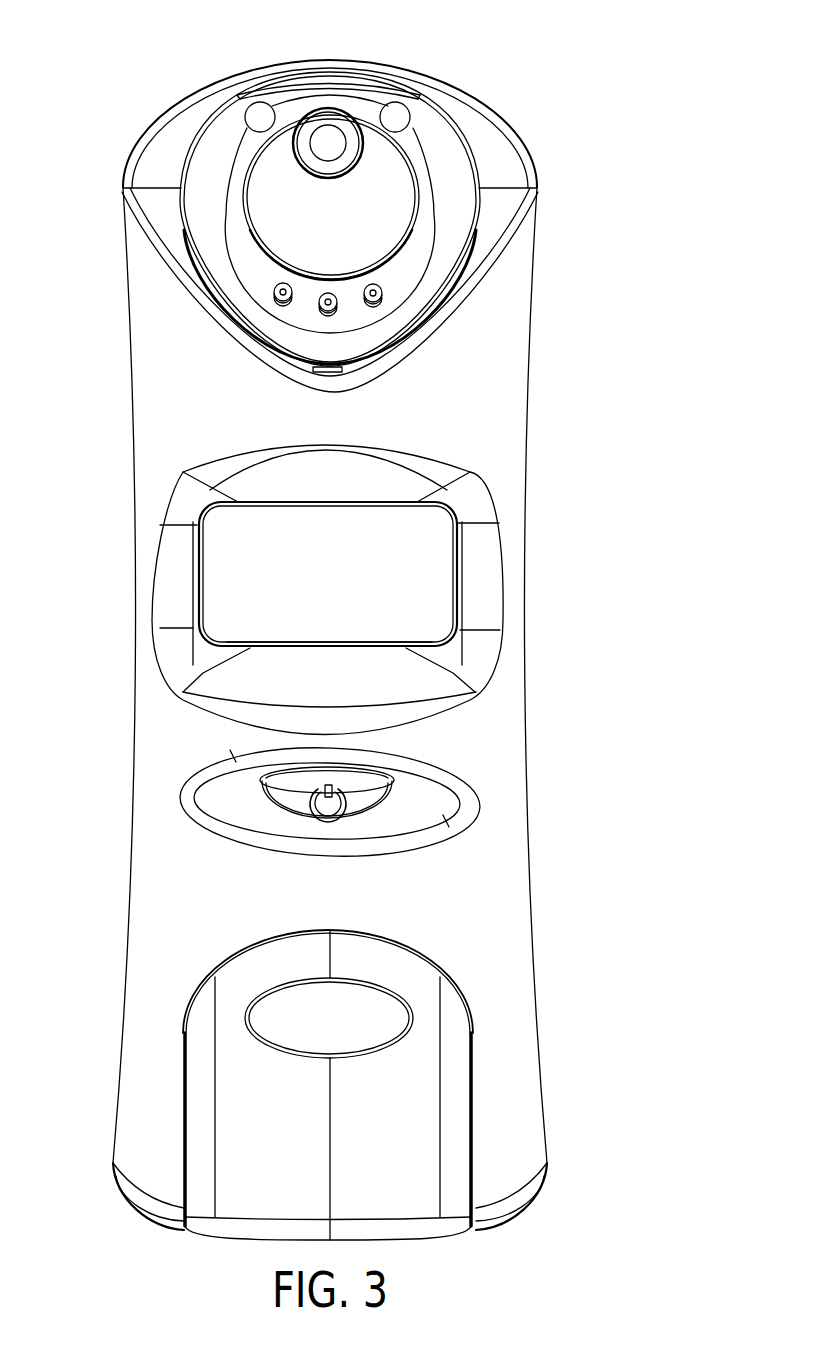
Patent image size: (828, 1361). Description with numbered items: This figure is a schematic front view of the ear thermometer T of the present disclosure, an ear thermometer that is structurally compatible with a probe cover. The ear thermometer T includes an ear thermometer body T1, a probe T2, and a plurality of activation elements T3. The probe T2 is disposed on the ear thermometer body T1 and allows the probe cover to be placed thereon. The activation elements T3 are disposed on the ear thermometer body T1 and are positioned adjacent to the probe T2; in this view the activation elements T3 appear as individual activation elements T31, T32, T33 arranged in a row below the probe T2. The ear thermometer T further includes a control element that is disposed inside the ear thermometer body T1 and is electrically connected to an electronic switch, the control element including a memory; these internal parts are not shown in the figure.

The ear thermometer T is at (155, 98).
The ear thermometer body T1 is at (152, 738).
The probe T2 is at (375, 175).
The activation elements T3 is at (667, 318).
The first button T31 is at (285, 300).
The second button T32 is at (330, 310).
The third button T33 is at (380, 291).